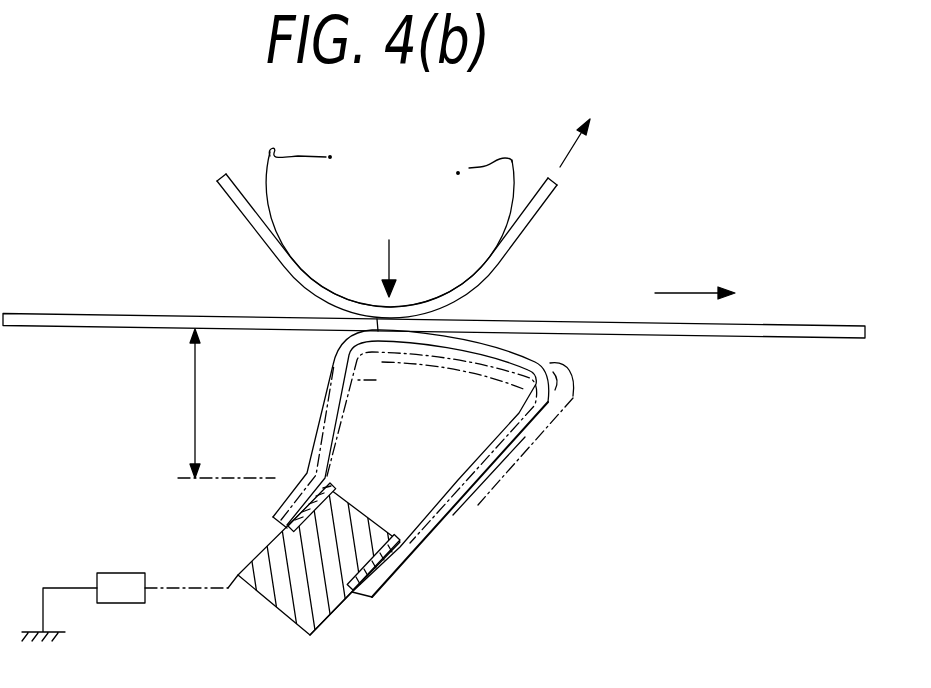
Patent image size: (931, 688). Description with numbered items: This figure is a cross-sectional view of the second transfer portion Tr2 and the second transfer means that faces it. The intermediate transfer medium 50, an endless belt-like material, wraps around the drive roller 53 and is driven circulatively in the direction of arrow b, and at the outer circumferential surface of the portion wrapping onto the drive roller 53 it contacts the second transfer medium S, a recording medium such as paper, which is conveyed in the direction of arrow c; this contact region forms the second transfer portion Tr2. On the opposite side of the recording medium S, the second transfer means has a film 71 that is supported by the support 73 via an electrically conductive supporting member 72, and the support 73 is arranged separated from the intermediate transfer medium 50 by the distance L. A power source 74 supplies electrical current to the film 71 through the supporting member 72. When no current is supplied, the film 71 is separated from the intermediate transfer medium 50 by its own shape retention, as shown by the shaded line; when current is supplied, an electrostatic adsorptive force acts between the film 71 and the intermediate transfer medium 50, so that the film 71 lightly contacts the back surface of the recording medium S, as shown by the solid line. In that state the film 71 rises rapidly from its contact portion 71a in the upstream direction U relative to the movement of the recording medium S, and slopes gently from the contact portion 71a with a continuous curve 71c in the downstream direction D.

The intermediate transfer medium 50 is at (532, 212).
The drive roller 53 is at (268, 178).
The film 71 is at (378, 380).
The contact portion 71a is at (376, 317).
The continuous curve 71c is at (571, 393).
The supporting member 72 is at (396, 543).
The support 73 is at (332, 598).
The power source 74 is at (120, 571).
The second transfer medium S is at (818, 337).
The second transfer portion Tr2 is at (388, 250).
The distance L is at (223, 403).
The upstream direction U is at (335, 341).
The downstream direction D is at (540, 340).
The direction of movement of intermediate transfer medium b is at (582, 129).
The direction of conveyance of recording medium c is at (695, 276).